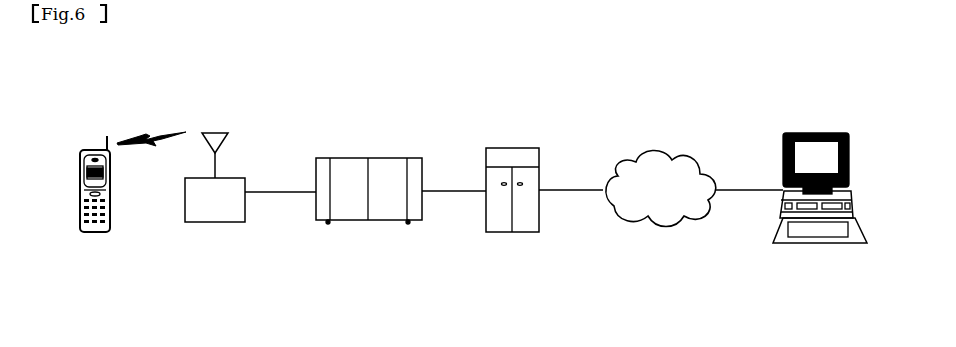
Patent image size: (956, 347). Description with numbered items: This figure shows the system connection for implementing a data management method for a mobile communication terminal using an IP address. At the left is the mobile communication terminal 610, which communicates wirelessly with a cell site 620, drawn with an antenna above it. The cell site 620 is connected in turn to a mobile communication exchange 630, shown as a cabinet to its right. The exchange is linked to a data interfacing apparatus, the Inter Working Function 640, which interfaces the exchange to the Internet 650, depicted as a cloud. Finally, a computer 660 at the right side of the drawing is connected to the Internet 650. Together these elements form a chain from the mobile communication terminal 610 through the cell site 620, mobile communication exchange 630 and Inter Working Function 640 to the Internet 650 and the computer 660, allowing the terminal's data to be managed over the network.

The mobile communication terminal 610 is at (94, 233).
The cell site 620 is at (237, 178).
The mobile communication exchange 630 is at (398, 158).
The Inter Working Function 640 is at (515, 148).
The Internet 650 is at (678, 152).
The computer 660 is at (818, 133).